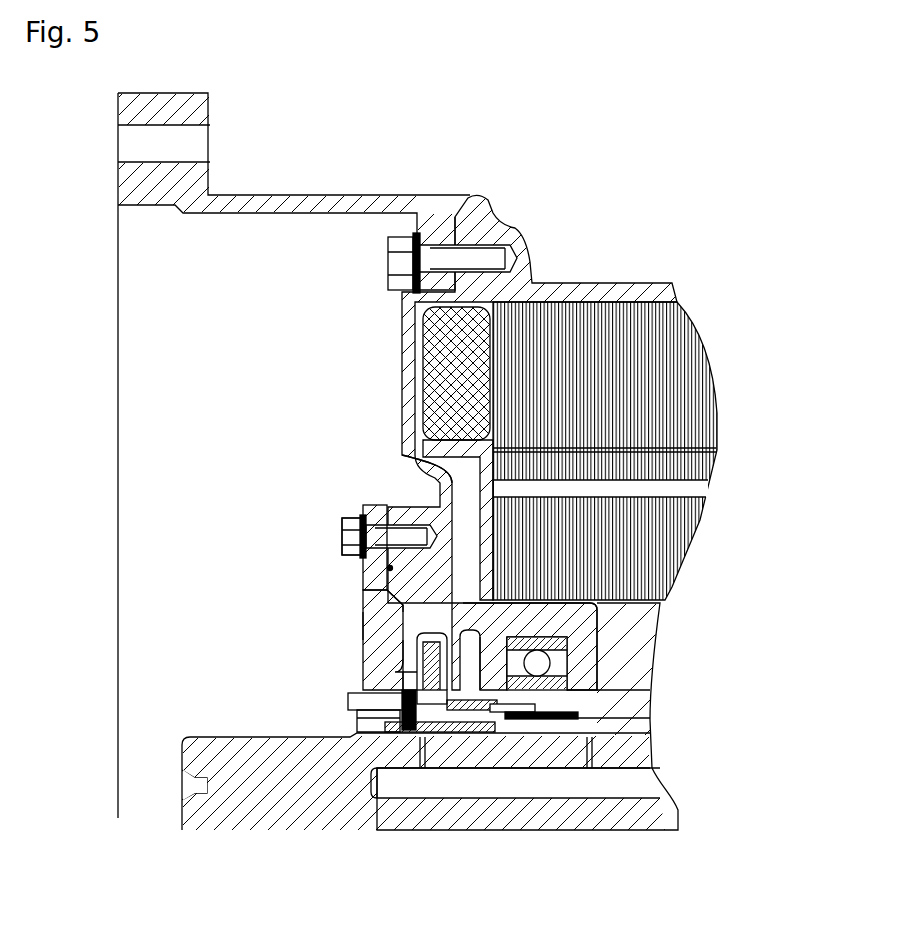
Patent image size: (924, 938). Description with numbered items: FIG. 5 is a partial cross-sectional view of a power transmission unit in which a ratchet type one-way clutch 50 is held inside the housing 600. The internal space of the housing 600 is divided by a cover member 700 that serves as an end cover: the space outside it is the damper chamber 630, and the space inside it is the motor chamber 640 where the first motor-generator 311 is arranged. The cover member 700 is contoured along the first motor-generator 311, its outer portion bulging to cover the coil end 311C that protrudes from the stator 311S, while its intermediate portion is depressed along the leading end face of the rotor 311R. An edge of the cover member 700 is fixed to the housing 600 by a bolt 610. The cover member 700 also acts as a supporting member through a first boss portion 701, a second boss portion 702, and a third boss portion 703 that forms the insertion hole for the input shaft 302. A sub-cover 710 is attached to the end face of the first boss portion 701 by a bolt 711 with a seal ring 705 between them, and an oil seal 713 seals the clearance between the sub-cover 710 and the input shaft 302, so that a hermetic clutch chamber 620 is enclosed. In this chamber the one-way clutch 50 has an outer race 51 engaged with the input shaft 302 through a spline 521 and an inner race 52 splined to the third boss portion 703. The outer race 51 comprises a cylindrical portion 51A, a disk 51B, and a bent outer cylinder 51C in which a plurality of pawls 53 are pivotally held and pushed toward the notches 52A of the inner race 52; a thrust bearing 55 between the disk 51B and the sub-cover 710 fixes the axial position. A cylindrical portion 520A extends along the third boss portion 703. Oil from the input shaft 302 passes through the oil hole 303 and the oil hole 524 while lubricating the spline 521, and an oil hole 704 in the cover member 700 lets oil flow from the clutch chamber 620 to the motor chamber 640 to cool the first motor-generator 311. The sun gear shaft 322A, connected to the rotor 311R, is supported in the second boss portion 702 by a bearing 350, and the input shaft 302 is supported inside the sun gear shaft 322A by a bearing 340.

The housing 600 is at (330, 206).
The bolt 610 is at (408, 238).
The damper chamber 630 is at (266, 306).
The cover member 700 is at (408, 340).
The oil hole 704 is at (443, 597).
The coil end 311C is at (470, 316).
The first motor-generator 311 is at (716, 333).
The rotor 311R is at (570, 362).
The stator 311S is at (695, 428).
The motor chamber 640 is at (442, 456).
The first boss portion 701 is at (378, 516).
The sub-cover 710 is at (355, 524).
The bolt 711 is at (352, 530).
The seal ring 705 is at (388, 568).
The outer race 51 is at (437, 634).
The outer cylinder 51C is at (392, 606).
The pawl 53 is at (366, 618).
The one-way clutch 50 is at (395, 652).
The notch 52A is at (423, 667).
The disk 51B is at (413, 678).
The thrust bearing 55 is at (350, 697).
The cylindrical portion 51A is at (358, 720).
The oil seal 713 is at (362, 725).
The inner race 52 is at (528, 740).
The spline 521 is at (402, 723).
The oil hole 524 is at (425, 745).
The cylindrical portion 520A is at (503, 725).
The third boss portion 703 is at (465, 705).
The second boss portion 702 is at (557, 624).
The bearing 350 is at (552, 662).
The sun gear shaft 322A is at (635, 680).
The clutch chamber 620 is at (537, 705).
The input shaft 302 is at (219, 748).
The oil hole 303 is at (434, 760).
The bearing 340 is at (595, 745).